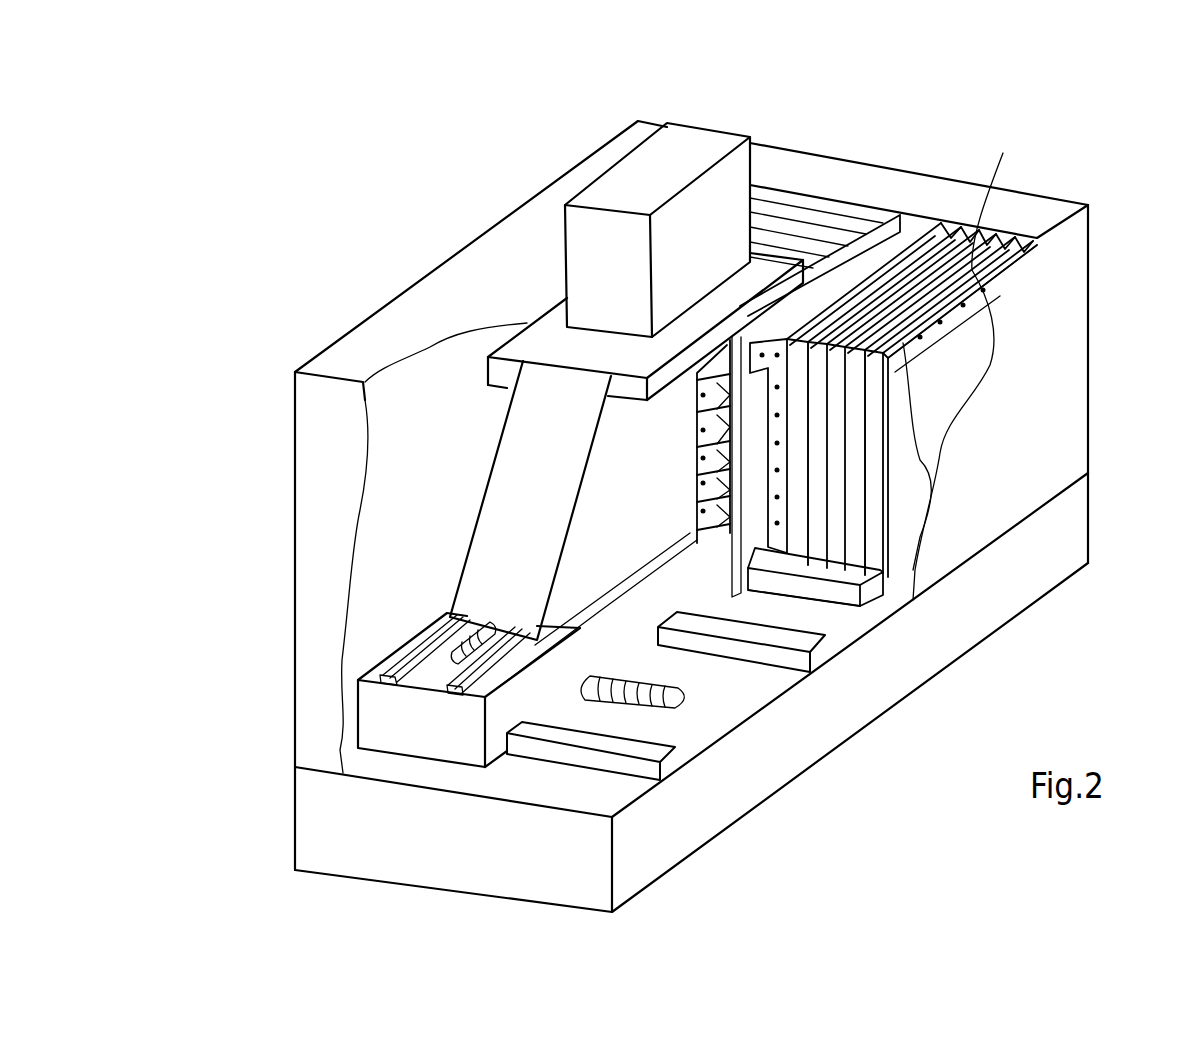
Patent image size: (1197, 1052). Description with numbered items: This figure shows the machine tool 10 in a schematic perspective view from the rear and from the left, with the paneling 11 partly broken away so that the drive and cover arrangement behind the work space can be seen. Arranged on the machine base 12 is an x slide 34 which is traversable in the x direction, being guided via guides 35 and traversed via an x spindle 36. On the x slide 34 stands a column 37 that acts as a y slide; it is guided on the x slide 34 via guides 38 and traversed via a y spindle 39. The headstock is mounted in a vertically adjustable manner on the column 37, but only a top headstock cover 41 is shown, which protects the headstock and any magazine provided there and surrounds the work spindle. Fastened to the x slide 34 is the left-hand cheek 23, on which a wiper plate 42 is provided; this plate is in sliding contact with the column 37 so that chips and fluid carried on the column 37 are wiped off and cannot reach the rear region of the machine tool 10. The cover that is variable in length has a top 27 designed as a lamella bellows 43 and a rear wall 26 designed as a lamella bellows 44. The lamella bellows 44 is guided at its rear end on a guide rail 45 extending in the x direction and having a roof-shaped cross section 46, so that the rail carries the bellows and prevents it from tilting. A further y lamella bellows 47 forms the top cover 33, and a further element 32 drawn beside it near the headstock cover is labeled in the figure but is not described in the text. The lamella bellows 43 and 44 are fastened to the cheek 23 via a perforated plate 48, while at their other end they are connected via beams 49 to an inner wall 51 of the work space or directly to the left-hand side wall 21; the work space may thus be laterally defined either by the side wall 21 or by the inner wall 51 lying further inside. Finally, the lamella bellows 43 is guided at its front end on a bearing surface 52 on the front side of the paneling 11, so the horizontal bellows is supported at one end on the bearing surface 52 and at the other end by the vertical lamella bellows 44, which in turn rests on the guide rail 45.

The machine tool 10 is at (913, 137).
The paneling 11 is at (1062, 250).
The machine base 12 is at (1077, 535).
The left-hand side wall 21 is at (1037, 390).
The left-hand cheek 23 is at (747, 500).
The rear wall 26 is at (817, 400).
The top 27 is at (1005, 152).
The support beam 32 is at (745, 287).
The top cover 33 is at (843, 237).
The x slide 34 is at (383, 712).
The guides 35 is at (823, 640).
The x spindle 36 is at (693, 690).
The column 37 is at (515, 478).
The guides 38 is at (390, 660).
The y spindle 39 is at (453, 660).
The top headstock cover 41 is at (647, 190).
The wiper plate 42 is at (700, 420).
The lamella bellows 43 is at (965, 245).
The lamella bellows 44 is at (853, 407).
The guide rail 45 is at (836, 605).
The roof-shaped cross section 46 is at (873, 587).
The y lamella bellows 47 is at (770, 222).
The perforated plate 48 is at (777, 433).
The beams 49 is at (912, 350).
The inner wall 51 is at (962, 327).
The bearing surface 52 is at (935, 275).